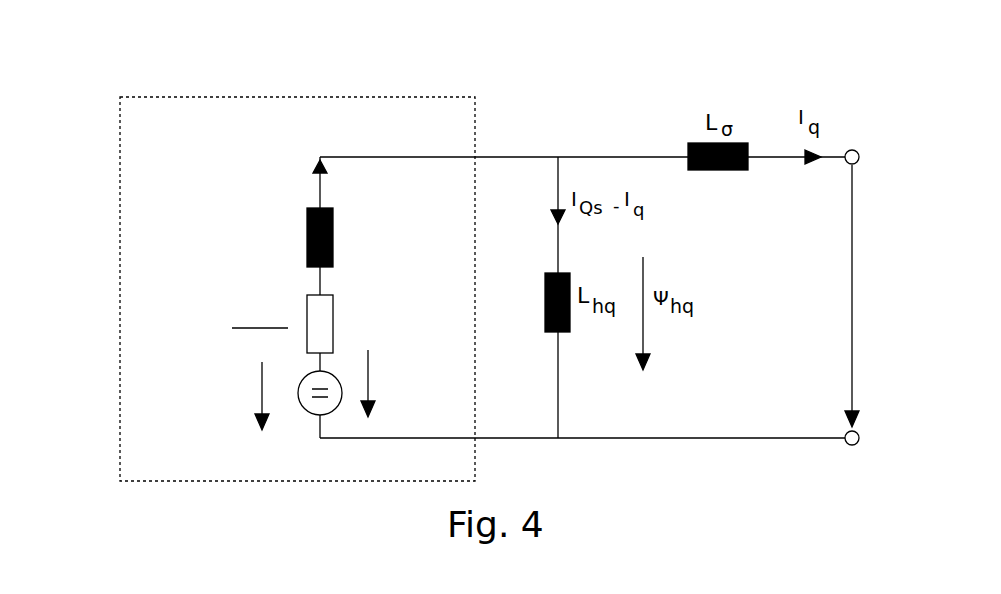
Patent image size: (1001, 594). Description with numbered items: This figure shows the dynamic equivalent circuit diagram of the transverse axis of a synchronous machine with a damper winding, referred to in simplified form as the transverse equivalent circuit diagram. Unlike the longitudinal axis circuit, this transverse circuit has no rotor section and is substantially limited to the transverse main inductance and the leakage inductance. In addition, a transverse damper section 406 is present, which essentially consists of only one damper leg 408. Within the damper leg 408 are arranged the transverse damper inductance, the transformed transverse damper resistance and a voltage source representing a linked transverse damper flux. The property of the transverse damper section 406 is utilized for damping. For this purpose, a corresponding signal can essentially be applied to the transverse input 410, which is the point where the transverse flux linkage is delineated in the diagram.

The transverse damper section 406 is at (222, 97).
The damper leg 408 is at (152, 148).
The transverse input 410 is at (880, 218).